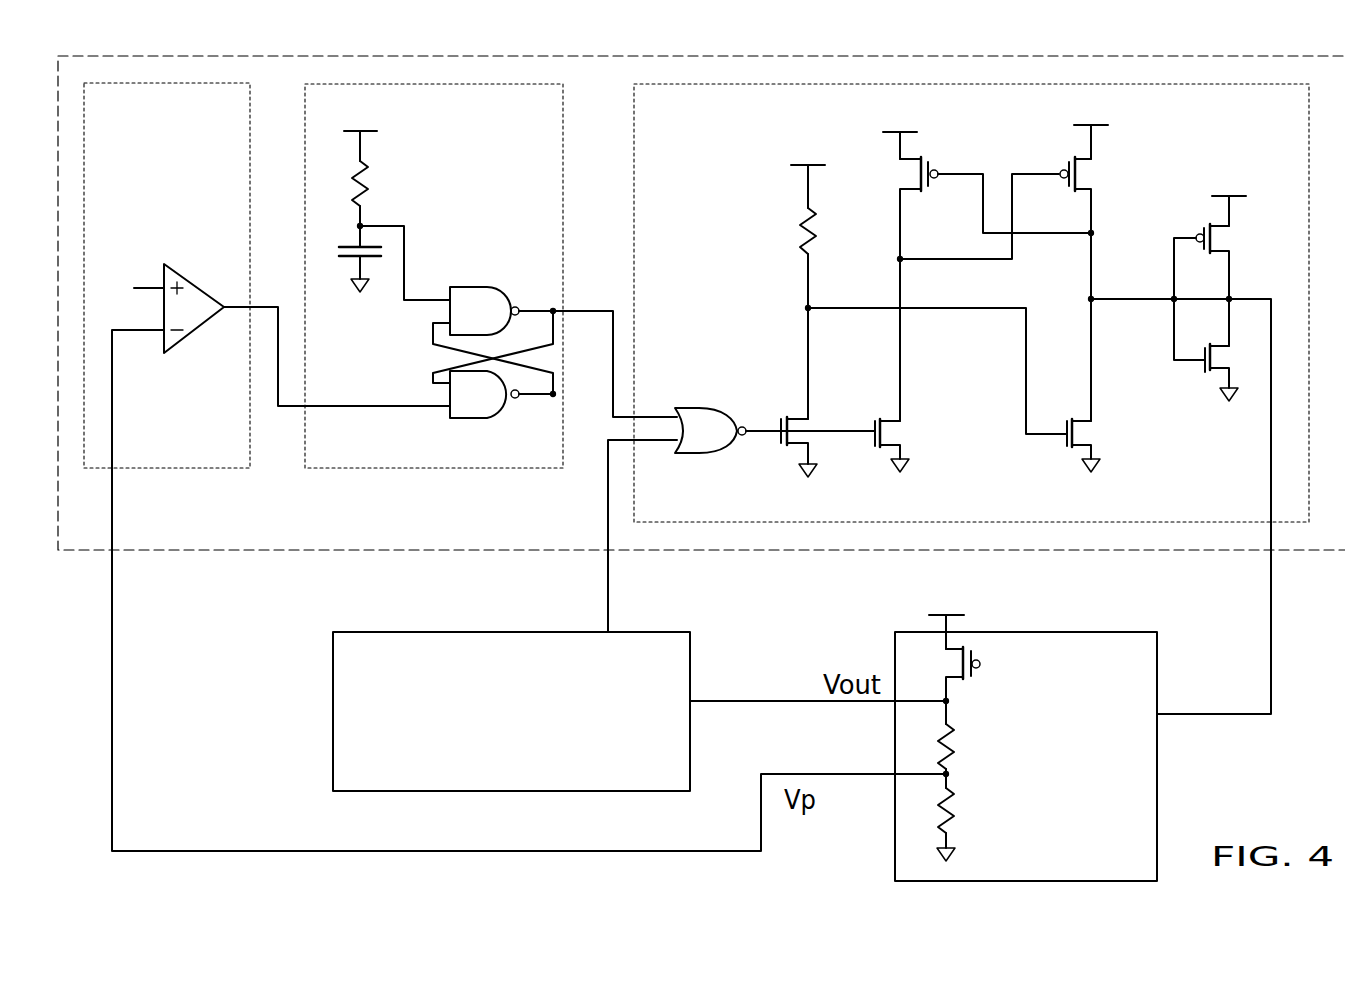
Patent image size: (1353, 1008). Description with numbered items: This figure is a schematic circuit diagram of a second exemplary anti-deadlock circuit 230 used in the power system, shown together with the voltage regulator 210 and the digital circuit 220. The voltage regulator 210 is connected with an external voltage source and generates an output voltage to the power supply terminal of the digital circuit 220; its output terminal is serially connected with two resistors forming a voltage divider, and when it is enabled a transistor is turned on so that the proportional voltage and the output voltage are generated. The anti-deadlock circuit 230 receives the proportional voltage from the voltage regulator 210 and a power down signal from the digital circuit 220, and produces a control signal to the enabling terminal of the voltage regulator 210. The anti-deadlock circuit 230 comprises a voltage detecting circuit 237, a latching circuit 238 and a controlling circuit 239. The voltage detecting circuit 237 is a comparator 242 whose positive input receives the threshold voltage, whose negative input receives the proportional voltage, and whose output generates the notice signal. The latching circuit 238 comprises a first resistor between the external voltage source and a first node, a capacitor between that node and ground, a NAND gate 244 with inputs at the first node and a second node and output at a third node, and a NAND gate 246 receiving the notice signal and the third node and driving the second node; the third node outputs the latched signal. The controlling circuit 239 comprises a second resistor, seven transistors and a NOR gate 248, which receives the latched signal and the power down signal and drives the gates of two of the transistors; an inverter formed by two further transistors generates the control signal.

The voltage regulator 210 is at (1119, 865).
The digital circuit 220 is at (406, 782).
The anti-deadlock circuit 230 is at (448, 540).
The voltage detecting circuit 237 is at (154, 122).
The latching circuit 238 is at (544, 122).
The controlling circuit 239 is at (699, 122).
The comparator 242 is at (182, 264).
The NAND gate 244 is at (480, 286).
The NAND gate 246 is at (480, 418).
The NOR gate 248 is at (700, 408).